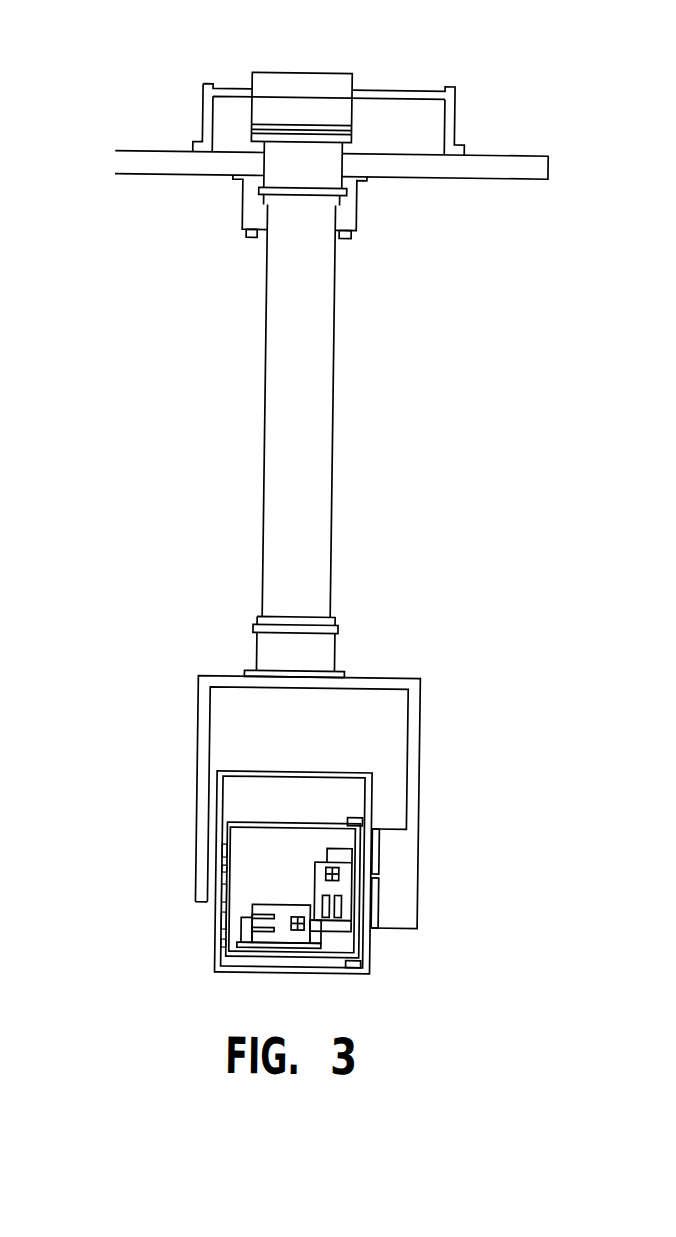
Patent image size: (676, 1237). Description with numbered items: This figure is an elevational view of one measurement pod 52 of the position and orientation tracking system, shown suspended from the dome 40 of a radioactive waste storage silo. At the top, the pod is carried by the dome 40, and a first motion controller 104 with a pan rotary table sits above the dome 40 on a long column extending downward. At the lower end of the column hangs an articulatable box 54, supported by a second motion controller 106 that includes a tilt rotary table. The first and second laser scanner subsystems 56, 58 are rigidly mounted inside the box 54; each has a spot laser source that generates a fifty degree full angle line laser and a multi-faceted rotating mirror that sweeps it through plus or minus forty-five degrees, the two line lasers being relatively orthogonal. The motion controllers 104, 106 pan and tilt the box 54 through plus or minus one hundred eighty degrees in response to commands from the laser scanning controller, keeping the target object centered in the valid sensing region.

The dome 40 is at (492, 154).
The measurement pod 52 is at (124, 460).
The articulatable box 54 is at (265, 772).
The first laser scanner subsystem 56 is at (261, 907).
The second laser scanner subsystem 58 is at (331, 860).
The first motion controller 104 is at (259, 74).
The second motion controller 106 is at (423, 878).